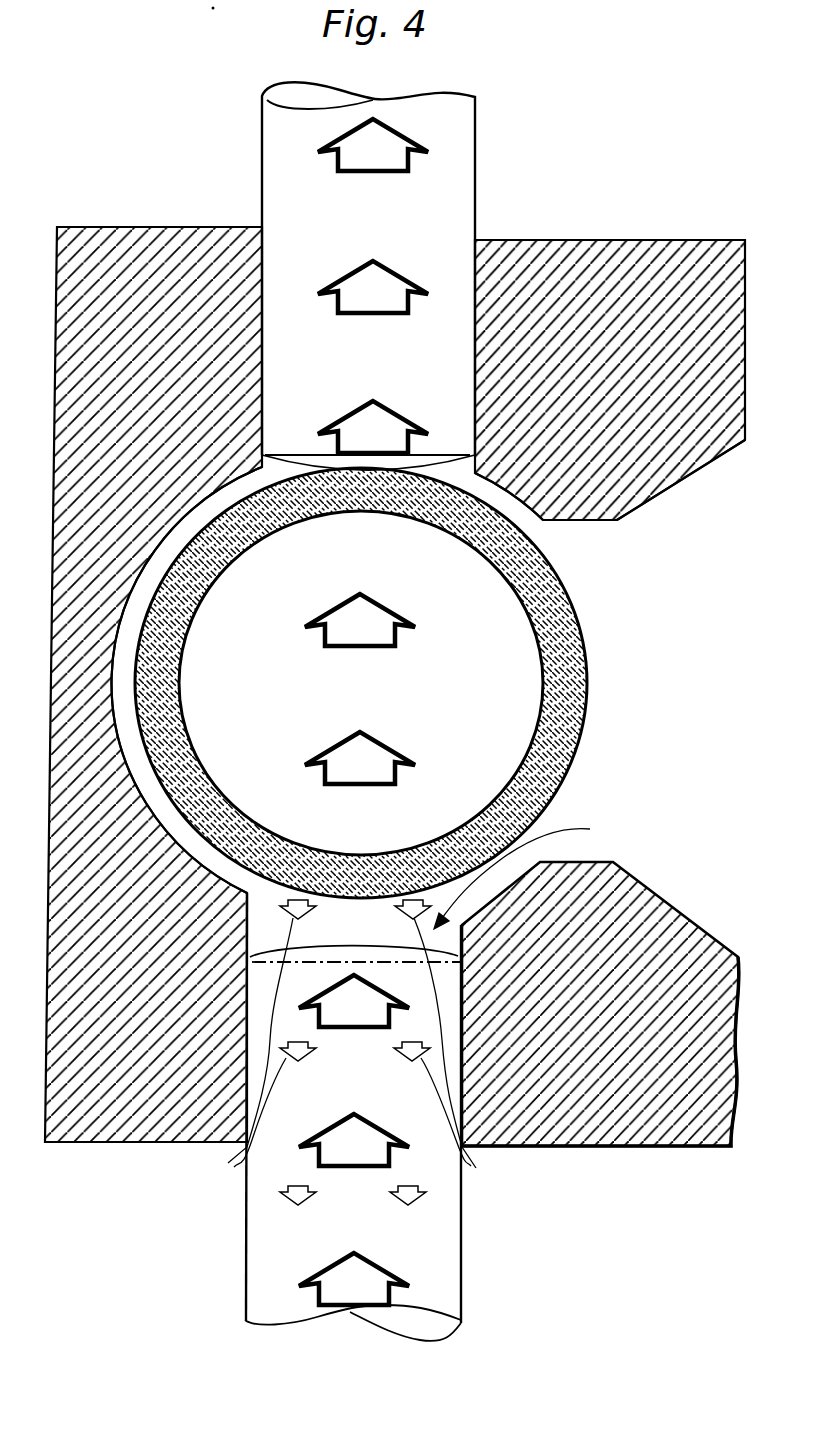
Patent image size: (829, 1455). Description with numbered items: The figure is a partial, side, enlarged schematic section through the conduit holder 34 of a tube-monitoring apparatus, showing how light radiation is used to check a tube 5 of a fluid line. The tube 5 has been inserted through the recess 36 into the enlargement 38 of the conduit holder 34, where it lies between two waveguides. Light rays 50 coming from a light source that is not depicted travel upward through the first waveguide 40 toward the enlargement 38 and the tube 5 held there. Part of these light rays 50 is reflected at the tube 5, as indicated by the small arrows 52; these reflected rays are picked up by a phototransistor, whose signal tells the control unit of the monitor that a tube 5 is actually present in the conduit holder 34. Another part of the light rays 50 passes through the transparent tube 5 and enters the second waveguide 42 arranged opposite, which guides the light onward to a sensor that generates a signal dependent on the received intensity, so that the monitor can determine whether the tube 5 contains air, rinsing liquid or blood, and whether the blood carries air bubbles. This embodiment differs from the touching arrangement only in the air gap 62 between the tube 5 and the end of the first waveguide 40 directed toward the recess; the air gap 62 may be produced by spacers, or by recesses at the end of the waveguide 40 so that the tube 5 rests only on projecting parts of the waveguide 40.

The tube 5 is at (573, 683).
The conduit holder 34 is at (650, 267).
The recess 36 is at (703, 477).
The enlargement 38 is at (560, 530).
The first waveguide 40 is at (430, 1228).
The second waveguide 42 is at (272, 206).
The light rays 50 is at (380, 403).
The reflected light rays 52 is at (283, 1197).
The air gap 62 is at (530, 872).